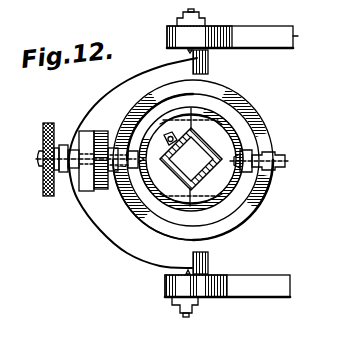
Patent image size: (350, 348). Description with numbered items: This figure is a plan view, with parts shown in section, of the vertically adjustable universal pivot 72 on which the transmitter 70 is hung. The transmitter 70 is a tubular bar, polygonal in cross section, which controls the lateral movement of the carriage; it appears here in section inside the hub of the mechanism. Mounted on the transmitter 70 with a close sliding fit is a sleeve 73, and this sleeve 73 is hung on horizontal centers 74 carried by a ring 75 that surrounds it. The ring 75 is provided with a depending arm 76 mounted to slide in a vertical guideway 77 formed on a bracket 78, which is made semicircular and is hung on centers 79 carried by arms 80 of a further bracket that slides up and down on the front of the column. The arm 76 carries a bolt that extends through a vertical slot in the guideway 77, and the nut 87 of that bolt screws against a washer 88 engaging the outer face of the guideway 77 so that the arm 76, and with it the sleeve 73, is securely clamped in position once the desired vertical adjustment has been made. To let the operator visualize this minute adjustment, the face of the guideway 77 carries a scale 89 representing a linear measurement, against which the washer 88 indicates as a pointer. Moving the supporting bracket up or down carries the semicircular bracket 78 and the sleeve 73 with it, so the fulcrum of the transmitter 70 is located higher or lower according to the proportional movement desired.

The transmitter 70 is at (191, 157).
The vertically adjustable universal pivot 72 is at (100, 222).
The sleeve 73 is at (258, 158).
The horizontal centers 74 is at (262, 168).
The ring 75 is at (229, 238).
The depending arm 76 is at (100, 132).
The vertical guideway 77 is at (84, 188).
The bracket 78 is at (113, 78).
The centers 79 is at (185, 13).
The arms 80 is at (296, 42).
The nut 87 is at (43, 146).
The washer 88 is at (80, 186).
The scale 89 is at (76, 143).